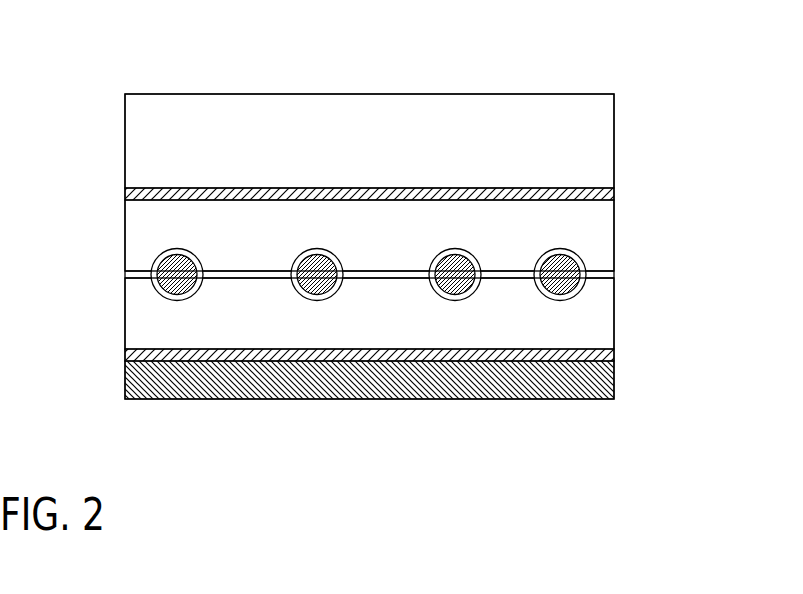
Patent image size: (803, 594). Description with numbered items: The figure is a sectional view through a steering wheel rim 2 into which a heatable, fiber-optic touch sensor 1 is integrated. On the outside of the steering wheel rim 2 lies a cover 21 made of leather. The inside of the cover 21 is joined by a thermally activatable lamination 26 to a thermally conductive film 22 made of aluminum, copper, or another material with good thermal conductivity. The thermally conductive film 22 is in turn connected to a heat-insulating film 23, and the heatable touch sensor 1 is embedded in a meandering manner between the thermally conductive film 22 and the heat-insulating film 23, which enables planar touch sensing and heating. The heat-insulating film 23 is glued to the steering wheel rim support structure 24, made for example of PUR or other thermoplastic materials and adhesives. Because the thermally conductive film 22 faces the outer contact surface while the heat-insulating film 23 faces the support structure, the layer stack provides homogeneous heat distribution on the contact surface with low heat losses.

The steering wheel rim 2 is at (499, 71).
The heatable touch sensor 1 is at (167, 272).
The cover 21 is at (141, 383).
The thermally conductive film 22 is at (598, 305).
The heat-insulating film 23 is at (597, 232).
The steering wheel rim support structure 24 is at (598, 142).
The thermally activatable lamination 26 is at (147, 195).